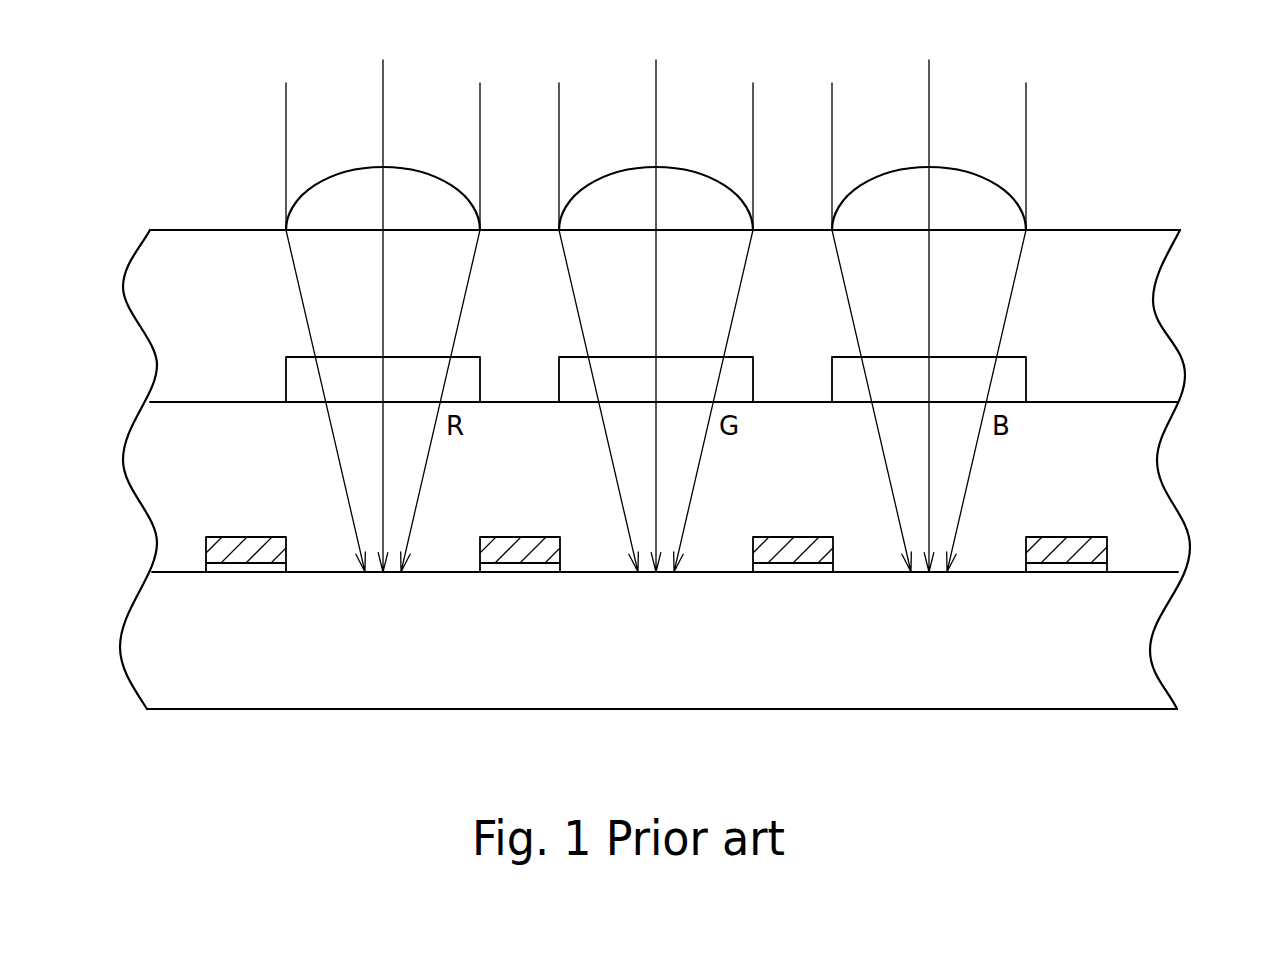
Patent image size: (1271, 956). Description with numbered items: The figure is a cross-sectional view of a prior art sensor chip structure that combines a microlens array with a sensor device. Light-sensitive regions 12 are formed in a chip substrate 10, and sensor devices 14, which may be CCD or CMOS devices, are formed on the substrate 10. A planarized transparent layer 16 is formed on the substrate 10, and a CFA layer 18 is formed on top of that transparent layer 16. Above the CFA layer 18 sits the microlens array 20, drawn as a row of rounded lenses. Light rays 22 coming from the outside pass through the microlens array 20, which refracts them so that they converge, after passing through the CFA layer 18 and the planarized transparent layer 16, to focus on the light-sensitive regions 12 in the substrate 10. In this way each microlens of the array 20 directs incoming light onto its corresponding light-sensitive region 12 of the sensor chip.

The chip substrate 10 is at (244, 661).
The light-sensitive regions 12 is at (372, 588).
The sensor devices 14 is at (1115, 547).
The planarized transparent layer 16 is at (245, 479).
The CFA layer 18 is at (1012, 382).
The microlens array 20 is at (1035, 195).
The light rays 22 is at (1026, 115).